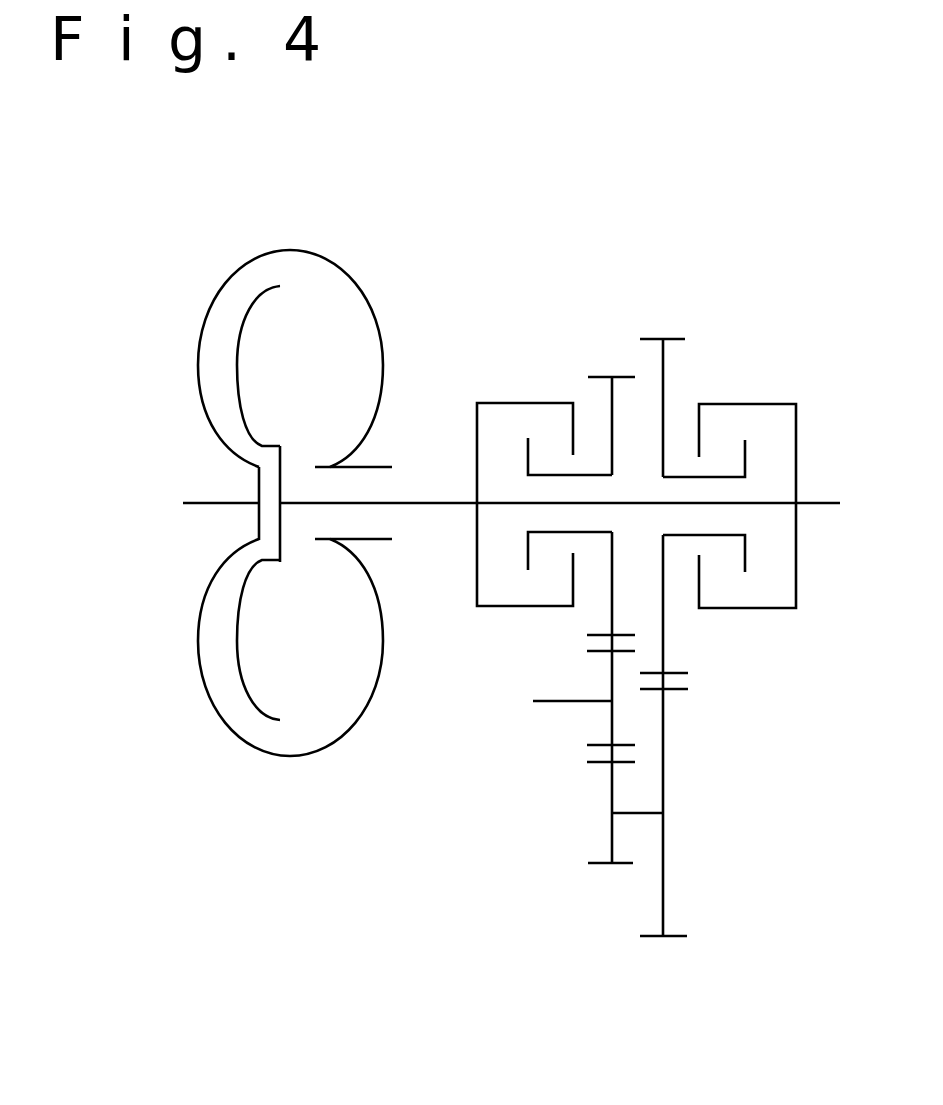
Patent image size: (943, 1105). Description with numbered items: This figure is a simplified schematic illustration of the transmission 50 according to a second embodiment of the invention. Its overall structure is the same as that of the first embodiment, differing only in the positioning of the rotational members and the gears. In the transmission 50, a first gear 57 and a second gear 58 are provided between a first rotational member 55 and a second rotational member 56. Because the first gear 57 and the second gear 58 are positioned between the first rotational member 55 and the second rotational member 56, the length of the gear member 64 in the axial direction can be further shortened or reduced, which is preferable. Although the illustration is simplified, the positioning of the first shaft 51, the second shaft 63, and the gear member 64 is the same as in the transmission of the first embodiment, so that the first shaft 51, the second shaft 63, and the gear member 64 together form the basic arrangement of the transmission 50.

The transmission 50 is at (537, 572).
The first shaft 51 is at (420, 503).
The first rotational member 55 is at (796, 423).
The second rotational member 56 is at (521, 403).
The first gear 57 is at (663, 623).
The second gear 58 is at (612, 602).
The second shaft 63 is at (612, 717).
The gear member 64 is at (635, 813).